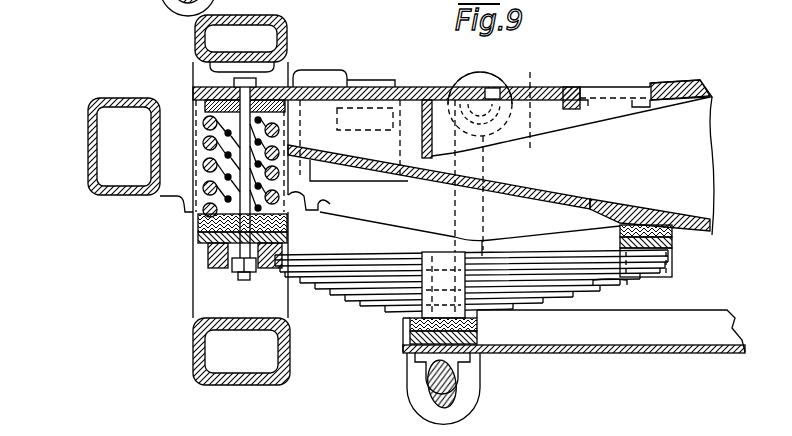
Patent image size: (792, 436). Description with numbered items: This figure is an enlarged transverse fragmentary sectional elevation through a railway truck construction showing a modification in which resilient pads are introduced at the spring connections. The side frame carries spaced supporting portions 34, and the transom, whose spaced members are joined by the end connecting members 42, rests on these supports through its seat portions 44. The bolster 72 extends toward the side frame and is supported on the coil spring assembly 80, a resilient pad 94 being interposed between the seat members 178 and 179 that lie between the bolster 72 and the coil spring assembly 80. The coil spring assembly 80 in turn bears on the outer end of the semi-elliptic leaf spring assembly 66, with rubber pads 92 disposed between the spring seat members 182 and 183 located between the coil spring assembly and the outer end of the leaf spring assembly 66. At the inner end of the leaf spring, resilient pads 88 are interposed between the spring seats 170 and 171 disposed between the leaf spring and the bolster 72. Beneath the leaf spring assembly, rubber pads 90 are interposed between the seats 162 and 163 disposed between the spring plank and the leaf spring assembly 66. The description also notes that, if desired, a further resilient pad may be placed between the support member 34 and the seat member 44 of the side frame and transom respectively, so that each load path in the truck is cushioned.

The supporting portion 34 is at (195, 293).
The end connecting member 42 is at (88, 141).
The seat portion 44 is at (466, 234).
The semi-elliptic spring 66 is at (607, 314).
The bolster 72 is at (573, 87).
The coil spring assembly 80 is at (180, 200).
The resilient pad 88 is at (674, 238).
The rubber pad 90 is at (418, 328).
The rubber pad 92 is at (200, 239).
The resilient pad 94 is at (215, 98).
The seat 162 is at (497, 356).
The seat 163 is at (480, 320).
The spring seat 170 is at (674, 250).
The spring seat 171 is at (712, 222).
The seat member 178 is at (262, 96).
The seat member 179 is at (345, 74).
The spring seat member 182 is at (208, 248).
The spring seat member 183 is at (200, 229).